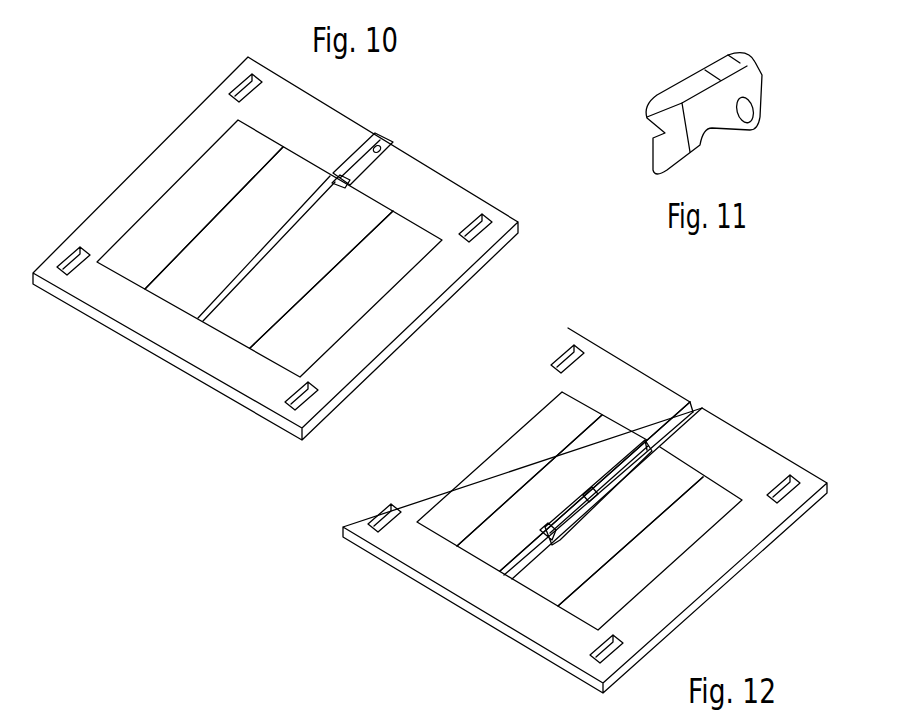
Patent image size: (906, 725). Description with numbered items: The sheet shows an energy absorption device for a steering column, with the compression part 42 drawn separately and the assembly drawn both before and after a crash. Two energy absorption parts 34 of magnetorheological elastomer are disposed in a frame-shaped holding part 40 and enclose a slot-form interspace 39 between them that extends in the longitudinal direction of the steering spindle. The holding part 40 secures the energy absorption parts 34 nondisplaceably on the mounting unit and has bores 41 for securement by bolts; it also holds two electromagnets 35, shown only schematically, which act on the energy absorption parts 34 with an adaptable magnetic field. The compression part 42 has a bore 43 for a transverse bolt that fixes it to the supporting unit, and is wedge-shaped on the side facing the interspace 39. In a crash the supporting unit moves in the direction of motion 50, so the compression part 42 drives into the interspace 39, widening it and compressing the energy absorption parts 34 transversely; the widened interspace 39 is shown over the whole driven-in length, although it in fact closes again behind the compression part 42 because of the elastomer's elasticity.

In FIG. 10, the energy absorption part 34 is at (175, 292).
In FIG. 12, the energy absorption part 34 is at (603, 438).
In FIG. 10, the electromagnet 35 is at (235, 140).
In FIG. 12, the electromagnet 35 is at (527, 448).
In FIG. 10, the slot-form interspace 39 is at (282, 235).
In FIG. 12, the slot-form interspace 39 is at (547, 543).
In FIG. 10, the holding part 40 is at (180, 152).
In FIG. 10, the bore 41 is at (233, 90).
In FIG. 12, the bore 41 is at (584, 504).
In FIG. 10, the compression part 42 is at (385, 142).
In FIG. 11, the compression part 42 is at (688, 92).
In FIG. 12, the compression part 42 is at (557, 525).
In FIG. 11, the bore 43 is at (745, 116).
In FIG. 10, the direction of motion 50 is at (400, 110).